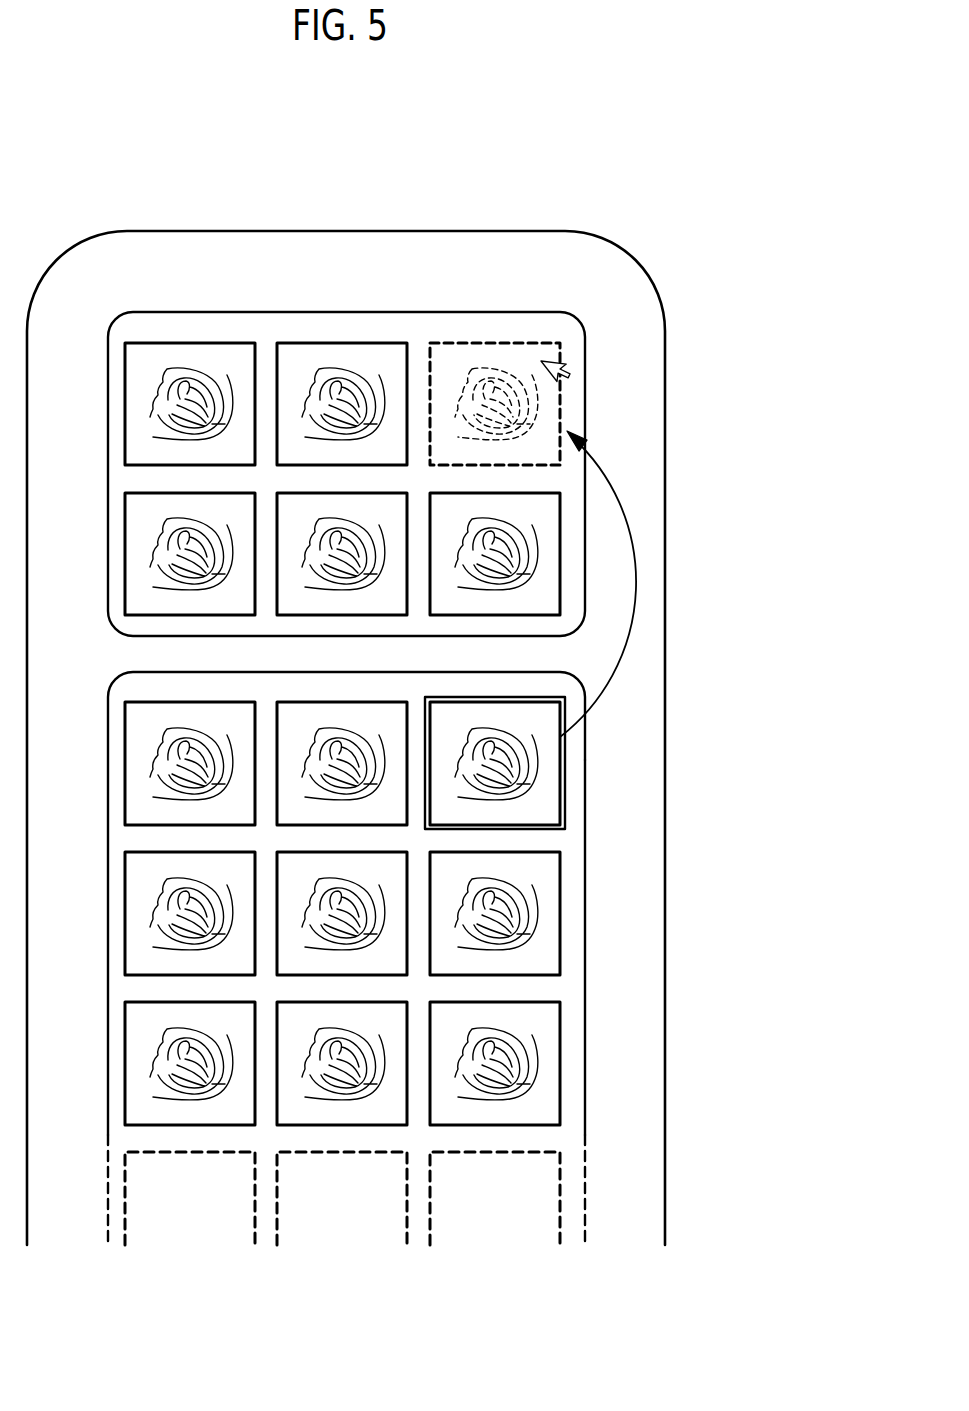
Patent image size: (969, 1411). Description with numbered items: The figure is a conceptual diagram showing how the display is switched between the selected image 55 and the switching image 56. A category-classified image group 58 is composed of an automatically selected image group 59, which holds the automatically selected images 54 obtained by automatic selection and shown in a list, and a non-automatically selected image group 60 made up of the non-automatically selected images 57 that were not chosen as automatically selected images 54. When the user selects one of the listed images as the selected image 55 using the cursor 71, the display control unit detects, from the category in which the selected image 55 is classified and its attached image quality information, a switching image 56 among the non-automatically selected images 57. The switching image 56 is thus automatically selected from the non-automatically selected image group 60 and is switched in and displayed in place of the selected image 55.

The category-classified image group 58 is at (545, 231).
The automatically selected image group 59 is at (193, 312).
The automatically selected image 54 is at (345, 343).
The selected image 55 is at (495, 343).
The cursor 71 is at (563, 383).
The switching image 56 is at (565, 826).
The non-automatically selected image 57 is at (124, 760).
The non-automatically selected image group 60 is at (585, 983).